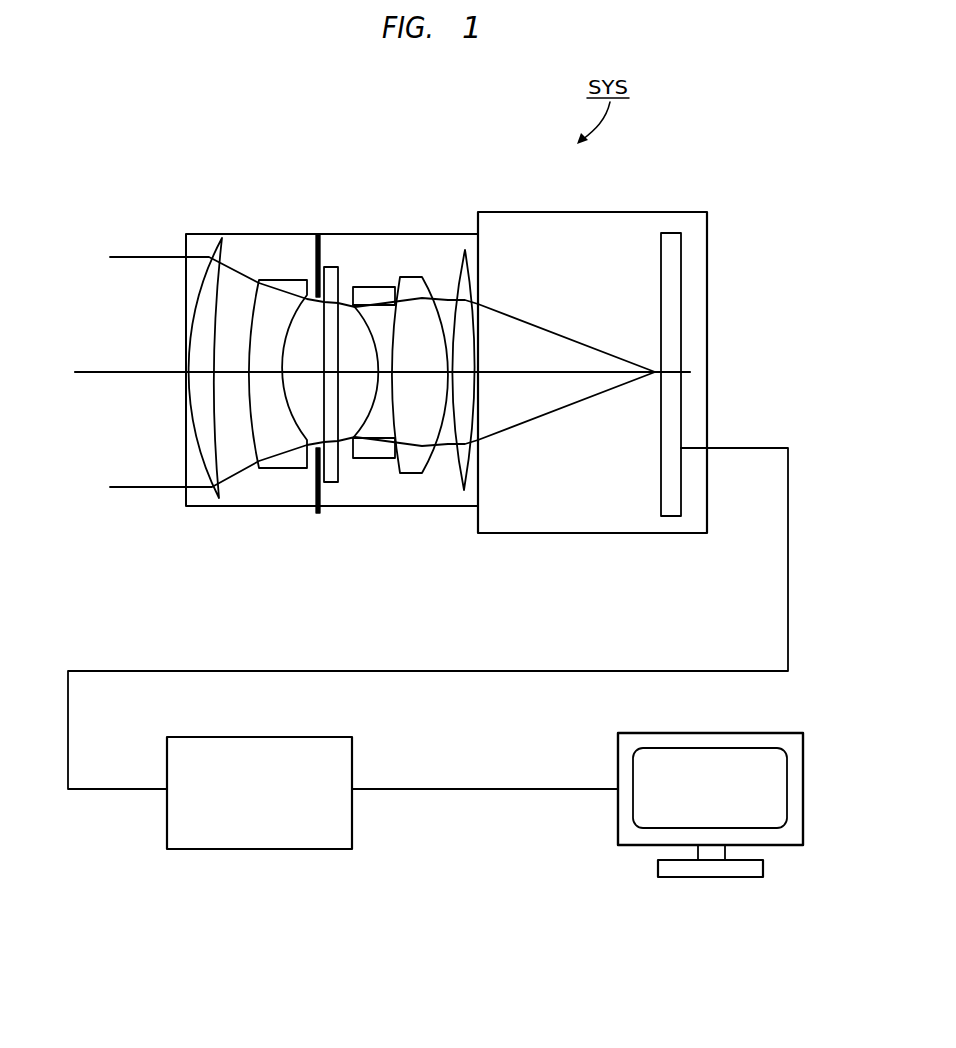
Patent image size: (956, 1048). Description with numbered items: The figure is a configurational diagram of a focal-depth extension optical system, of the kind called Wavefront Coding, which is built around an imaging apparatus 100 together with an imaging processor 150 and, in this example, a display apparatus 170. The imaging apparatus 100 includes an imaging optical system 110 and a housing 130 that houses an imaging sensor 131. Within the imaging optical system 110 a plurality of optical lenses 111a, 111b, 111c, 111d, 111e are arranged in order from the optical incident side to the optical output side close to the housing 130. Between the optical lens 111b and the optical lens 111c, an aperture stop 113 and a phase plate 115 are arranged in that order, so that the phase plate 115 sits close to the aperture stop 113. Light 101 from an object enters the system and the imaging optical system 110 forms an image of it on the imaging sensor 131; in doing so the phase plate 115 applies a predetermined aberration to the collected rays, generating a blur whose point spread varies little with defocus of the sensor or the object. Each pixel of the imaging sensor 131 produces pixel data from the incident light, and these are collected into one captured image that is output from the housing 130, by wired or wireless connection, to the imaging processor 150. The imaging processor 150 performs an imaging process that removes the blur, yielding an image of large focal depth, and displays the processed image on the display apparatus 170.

The imaging apparatus 100 is at (450, 176).
The light 101 is at (148, 254).
The imaging optical system 110 is at (472, 205).
The optical lens 111a is at (220, 500).
The optical lens 111b is at (270, 470).
The optical lens 111c is at (367, 462).
The optical lens 111d is at (423, 477).
The optical lens 111e is at (457, 493).
The aperture stop 113 is at (318, 514).
The phase plate 115 is at (342, 486).
The housing 130 is at (657, 211).
The imaging sensor 131 is at (670, 518).
The imaging processor 150 is at (258, 850).
The display apparatus 170 is at (707, 878).